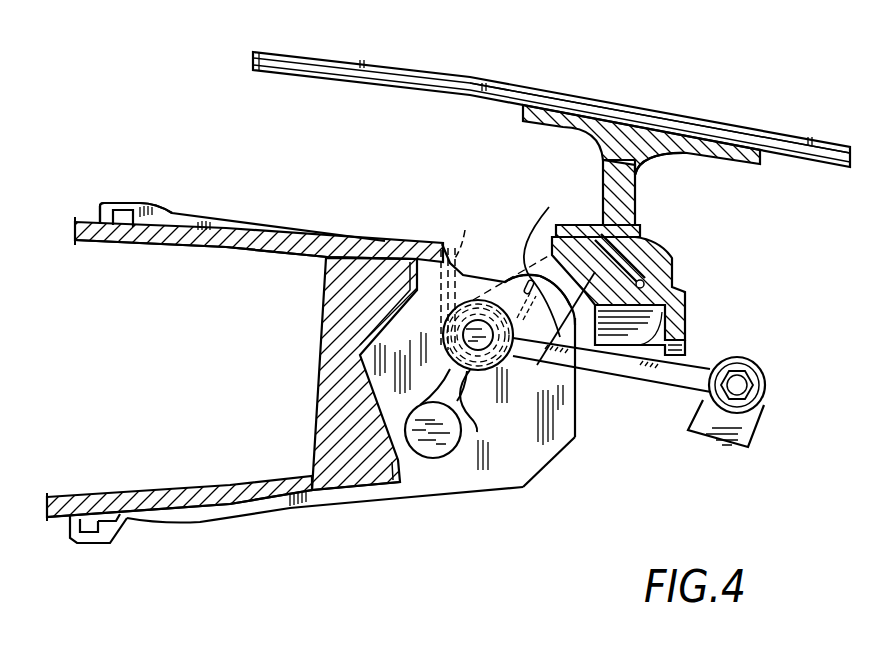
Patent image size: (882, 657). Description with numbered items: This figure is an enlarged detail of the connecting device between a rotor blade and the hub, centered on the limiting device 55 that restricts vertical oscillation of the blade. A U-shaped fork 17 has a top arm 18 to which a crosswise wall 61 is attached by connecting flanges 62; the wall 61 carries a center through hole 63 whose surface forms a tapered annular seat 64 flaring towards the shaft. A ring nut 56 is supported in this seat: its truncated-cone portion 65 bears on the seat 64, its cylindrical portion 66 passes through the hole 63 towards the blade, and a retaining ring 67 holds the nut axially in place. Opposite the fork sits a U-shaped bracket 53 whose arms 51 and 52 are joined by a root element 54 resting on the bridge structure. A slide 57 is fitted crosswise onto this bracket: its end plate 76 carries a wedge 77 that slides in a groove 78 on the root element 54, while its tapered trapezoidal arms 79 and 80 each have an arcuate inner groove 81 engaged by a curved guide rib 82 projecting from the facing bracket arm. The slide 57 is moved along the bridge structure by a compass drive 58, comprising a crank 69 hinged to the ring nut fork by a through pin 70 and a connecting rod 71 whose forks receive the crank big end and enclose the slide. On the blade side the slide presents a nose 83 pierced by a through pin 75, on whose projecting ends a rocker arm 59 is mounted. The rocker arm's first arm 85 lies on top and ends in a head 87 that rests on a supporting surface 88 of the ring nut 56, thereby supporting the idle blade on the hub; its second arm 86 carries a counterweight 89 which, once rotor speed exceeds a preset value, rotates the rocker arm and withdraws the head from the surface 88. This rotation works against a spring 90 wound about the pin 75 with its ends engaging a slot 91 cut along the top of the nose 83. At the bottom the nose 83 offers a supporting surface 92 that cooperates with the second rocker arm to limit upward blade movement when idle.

The fork 17 is at (600, 88).
The top arm 18 is at (650, 115).
The connecting flanges 62 is at (552, 102).
The crosswise wall 61 is at (640, 190).
The arm 79 is at (284, 238).
The arm 51 is at (230, 248).
The curved guide rib 82 is at (121, 206).
The inner groove 81 is at (123, 213).
The root element 54 is at (326, 392).
The end plate 76 is at (360, 352).
The wedge 77 is at (345, 372).
The groove 78 is at (388, 332).
The arm 52 is at (199, 488).
The bracket 53 is at (263, 500).
The arm 80 is at (323, 500).
The slide 57 is at (501, 494).
The supporting surface 92 is at (548, 463).
The nose 83 is at (560, 438).
The rocker arm 59 is at (524, 262).
The first arm 85 is at (513, 281).
The head 87 is at (542, 258).
The supporting surface 88 is at (534, 325).
The through pin 75 is at (478, 350).
The second arm 86 is at (454, 412).
The counterweight 89 is at (437, 458).
The spring 90 is at (448, 263).
The slot 91 is at (441, 247).
The ring nut 56 is at (688, 290).
The truncated-cone portion 65 is at (650, 270).
The cylindrical portion 66 is at (678, 277).
The retaining ring 67 is at (664, 292).
The through hole 63 is at (688, 316).
The tapered annular seat 64 is at (615, 277).
The limiting device 55 is at (710, 307).
The connecting rod 71 is at (659, 372).
The through pin 70 is at (763, 360).
The compass drive 58 is at (767, 380).
The crank 69 is at (772, 420).